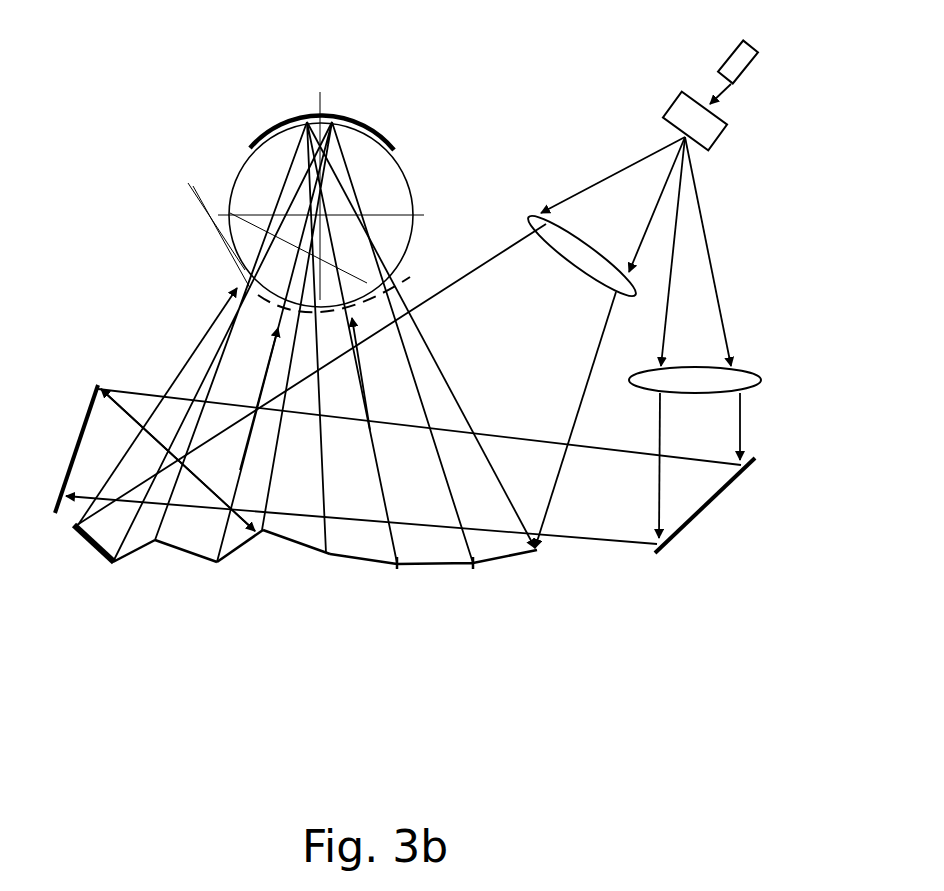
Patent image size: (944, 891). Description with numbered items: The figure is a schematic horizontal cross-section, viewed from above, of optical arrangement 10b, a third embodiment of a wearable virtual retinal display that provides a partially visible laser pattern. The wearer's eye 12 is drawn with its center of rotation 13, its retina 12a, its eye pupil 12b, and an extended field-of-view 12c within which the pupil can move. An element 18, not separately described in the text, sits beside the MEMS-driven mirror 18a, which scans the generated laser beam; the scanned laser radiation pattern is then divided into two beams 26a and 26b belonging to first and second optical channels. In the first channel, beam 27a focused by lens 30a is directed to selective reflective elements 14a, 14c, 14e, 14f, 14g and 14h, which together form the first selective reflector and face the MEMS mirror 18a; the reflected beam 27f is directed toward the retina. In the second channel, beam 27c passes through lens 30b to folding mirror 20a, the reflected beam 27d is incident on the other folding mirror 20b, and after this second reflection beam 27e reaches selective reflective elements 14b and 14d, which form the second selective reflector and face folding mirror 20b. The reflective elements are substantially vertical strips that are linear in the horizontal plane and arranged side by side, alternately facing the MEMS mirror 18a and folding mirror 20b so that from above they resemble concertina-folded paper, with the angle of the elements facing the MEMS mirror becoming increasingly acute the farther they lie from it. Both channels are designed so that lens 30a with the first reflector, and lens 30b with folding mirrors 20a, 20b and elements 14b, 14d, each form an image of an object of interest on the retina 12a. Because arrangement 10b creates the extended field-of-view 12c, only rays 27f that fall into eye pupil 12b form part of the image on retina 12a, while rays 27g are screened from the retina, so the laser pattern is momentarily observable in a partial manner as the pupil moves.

The optical arrangement 10b is at (74, 250).
The eye 12 is at (397, 197).
The retina 12a is at (285, 124).
The eye pupil 12b is at (257, 219).
The extended field-of-view 12c is at (250, 290).
The center of rotation 13 is at (357, 187).
The selective reflective element 14a is at (95, 552).
The selective reflective element 14b is at (138, 553).
The selective reflective element 14c is at (190, 557).
The selective reflective element 14d is at (237, 557).
The selective reflective element 14e is at (297, 550).
The selective reflective element 14f is at (380, 570).
The selective reflective element 14g is at (455, 572).
The selective reflective element 14h is at (512, 565).
The light source 18 is at (755, 70).
The MEMS-driven mirror 18a is at (675, 118).
The folding mirror 20a is at (723, 492).
The folding mirror 20b is at (90, 395).
The beam 26a is at (607, 178).
The beam 26b is at (710, 255).
The beam 27a is at (457, 293).
The beam 27c is at (740, 433).
The reflected beam 27d is at (577, 542).
The beam 27e is at (137, 414).
The reflected beam 27f is at (194, 425).
The rays 27g is at (370, 395).
The lens 30a is at (540, 212).
The lens 30b is at (757, 370).